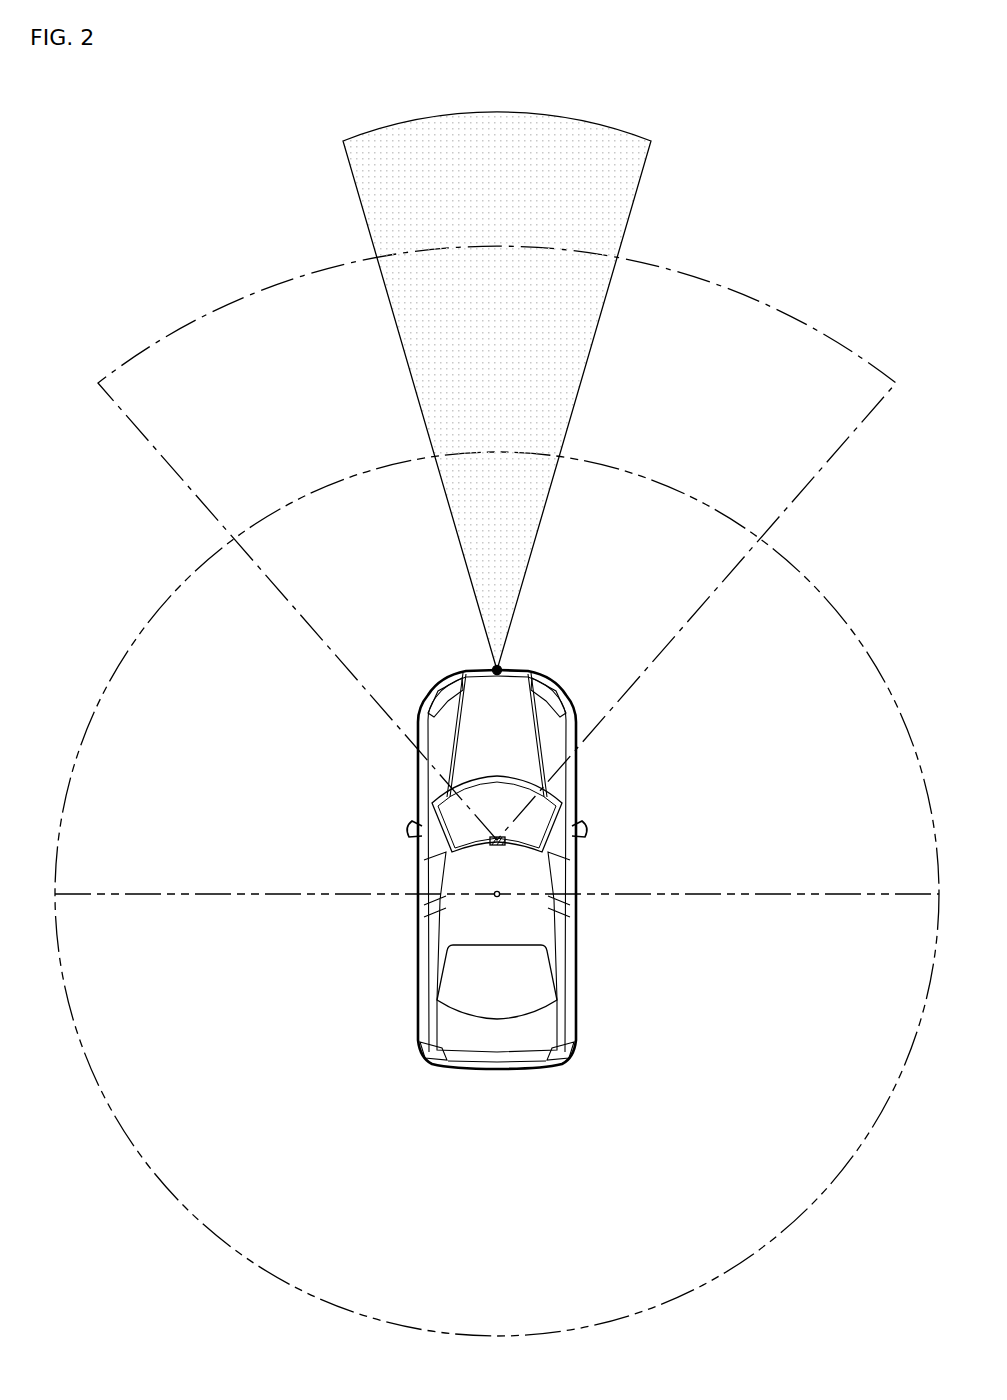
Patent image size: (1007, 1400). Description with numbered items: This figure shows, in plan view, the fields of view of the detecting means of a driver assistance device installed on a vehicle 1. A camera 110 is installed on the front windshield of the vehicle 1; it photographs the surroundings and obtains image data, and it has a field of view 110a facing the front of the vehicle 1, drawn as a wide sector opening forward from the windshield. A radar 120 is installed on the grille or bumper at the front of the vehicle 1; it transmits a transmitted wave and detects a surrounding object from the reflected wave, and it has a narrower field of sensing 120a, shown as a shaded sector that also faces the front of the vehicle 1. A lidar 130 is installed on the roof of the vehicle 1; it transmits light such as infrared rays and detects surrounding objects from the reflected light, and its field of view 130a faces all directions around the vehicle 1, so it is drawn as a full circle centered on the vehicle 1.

The vehicle 1 is at (598, 853).
The camera 110 is at (490, 841).
The field of view 110a is at (851, 438).
The radar 120 is at (500, 667).
The field of sensing 120a is at (612, 216).
The lidar 130 is at (495, 897).
The field of view 130a is at (842, 617).